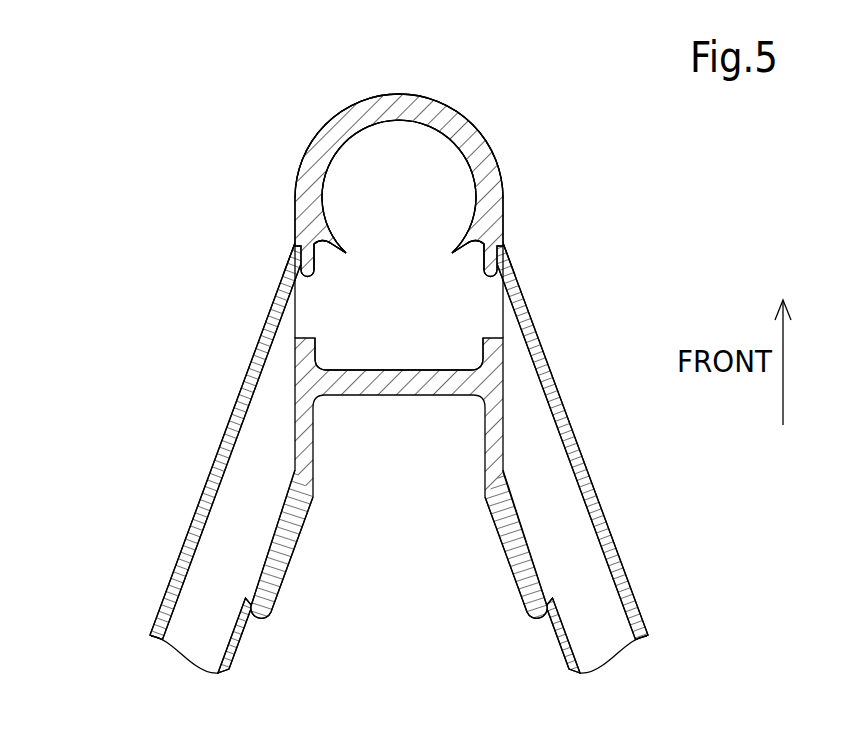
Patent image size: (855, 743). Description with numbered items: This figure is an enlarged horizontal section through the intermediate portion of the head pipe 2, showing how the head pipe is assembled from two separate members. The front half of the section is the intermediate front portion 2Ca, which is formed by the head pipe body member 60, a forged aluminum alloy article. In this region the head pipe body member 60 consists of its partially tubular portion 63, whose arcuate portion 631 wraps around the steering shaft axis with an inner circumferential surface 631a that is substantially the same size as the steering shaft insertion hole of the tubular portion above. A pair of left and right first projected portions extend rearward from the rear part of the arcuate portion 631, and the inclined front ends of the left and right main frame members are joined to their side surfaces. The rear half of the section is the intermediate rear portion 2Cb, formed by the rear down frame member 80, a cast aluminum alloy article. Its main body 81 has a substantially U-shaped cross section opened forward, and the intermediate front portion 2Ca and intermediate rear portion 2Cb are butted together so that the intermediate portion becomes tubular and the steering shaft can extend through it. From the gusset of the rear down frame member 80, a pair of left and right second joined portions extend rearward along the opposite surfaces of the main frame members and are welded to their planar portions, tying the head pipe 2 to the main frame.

The head pipe 2 is at (245, 193).
The intermediate front portion 2Ca is at (434, 187).
The intermediate rear portion 2Cb is at (399, 471).
The head pipe body member 60 is at (386, 187).
The partially tubular portion 63 is at (328, 187).
The arcuate portion 631 is at (325, 125).
The inner circumferential surface 631a is at (393, 121).
The rear down frame member 80 is at (399, 471).
The main body 81 is at (423, 372).